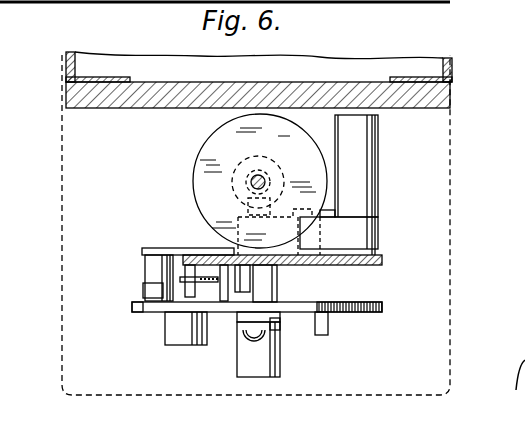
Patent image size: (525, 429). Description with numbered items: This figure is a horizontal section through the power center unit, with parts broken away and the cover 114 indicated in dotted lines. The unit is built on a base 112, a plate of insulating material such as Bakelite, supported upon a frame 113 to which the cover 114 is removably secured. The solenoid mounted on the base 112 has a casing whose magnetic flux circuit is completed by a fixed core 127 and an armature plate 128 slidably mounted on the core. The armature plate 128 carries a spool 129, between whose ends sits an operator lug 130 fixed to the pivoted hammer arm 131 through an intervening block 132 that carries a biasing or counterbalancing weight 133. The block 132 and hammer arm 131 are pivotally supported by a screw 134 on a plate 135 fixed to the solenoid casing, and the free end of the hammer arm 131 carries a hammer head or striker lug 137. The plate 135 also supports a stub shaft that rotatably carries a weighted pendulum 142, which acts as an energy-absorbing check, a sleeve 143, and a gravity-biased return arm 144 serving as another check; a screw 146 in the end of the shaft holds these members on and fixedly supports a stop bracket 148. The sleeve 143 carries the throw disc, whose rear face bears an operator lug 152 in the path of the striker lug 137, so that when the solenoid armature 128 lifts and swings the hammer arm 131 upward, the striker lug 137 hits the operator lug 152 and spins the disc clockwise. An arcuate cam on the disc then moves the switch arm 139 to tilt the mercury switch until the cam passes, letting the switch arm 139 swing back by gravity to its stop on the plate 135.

The base 112 is at (450, 100).
The frame 113 is at (452, 72).
The cover 114 is at (456, 201).
The fixed core 127 is at (260, 174).
The armature plate 128 is at (208, 139).
The spool 129 is at (233, 180).
The operator lug 130 is at (248, 208).
The hammer arm 131 is at (156, 248).
The block 132 is at (370, 240).
The counterbalancing weight 133 is at (375, 168).
The screw 134 is at (326, 214).
The plate 135 is at (382, 262).
The striker lug 137 is at (150, 268).
The switch arm 139 is at (208, 255).
The pendulum 142 is at (275, 290).
The sleeve 143 is at (277, 300).
The return arm 144 is at (243, 325).
The screw 146 is at (268, 338).
The stop bracket 148 is at (280, 325).
The operator lug 152 is at (143, 288).